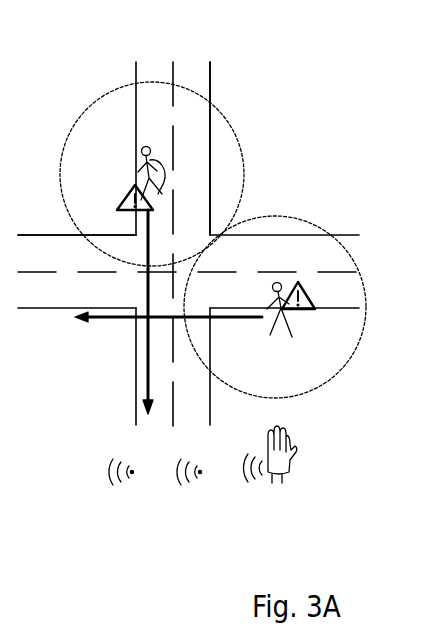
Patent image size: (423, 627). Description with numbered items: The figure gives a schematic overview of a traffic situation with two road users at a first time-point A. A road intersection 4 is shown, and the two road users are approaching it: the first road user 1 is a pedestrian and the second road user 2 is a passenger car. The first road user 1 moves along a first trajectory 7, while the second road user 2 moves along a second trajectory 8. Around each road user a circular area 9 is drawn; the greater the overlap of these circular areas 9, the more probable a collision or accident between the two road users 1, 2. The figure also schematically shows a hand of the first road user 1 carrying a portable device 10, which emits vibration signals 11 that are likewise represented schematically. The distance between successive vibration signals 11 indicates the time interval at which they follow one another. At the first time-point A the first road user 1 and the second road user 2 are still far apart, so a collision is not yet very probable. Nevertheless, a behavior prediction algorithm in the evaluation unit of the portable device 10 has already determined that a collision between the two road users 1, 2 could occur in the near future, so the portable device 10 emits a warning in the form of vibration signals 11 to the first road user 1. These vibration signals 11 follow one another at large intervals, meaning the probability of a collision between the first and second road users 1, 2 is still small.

The first road user 1 is at (292, 334).
The second road user 2 is at (136, 163).
The road intersection 4 is at (217, 252).
The first trajectory 7 is at (110, 319).
The second trajectory 8 is at (137, 250).
The circular area 9 is at (117, 88).
The portable device 10 is at (270, 488).
The vibration signals 11 is at (238, 483).
The first time-point A is at (239, 91).